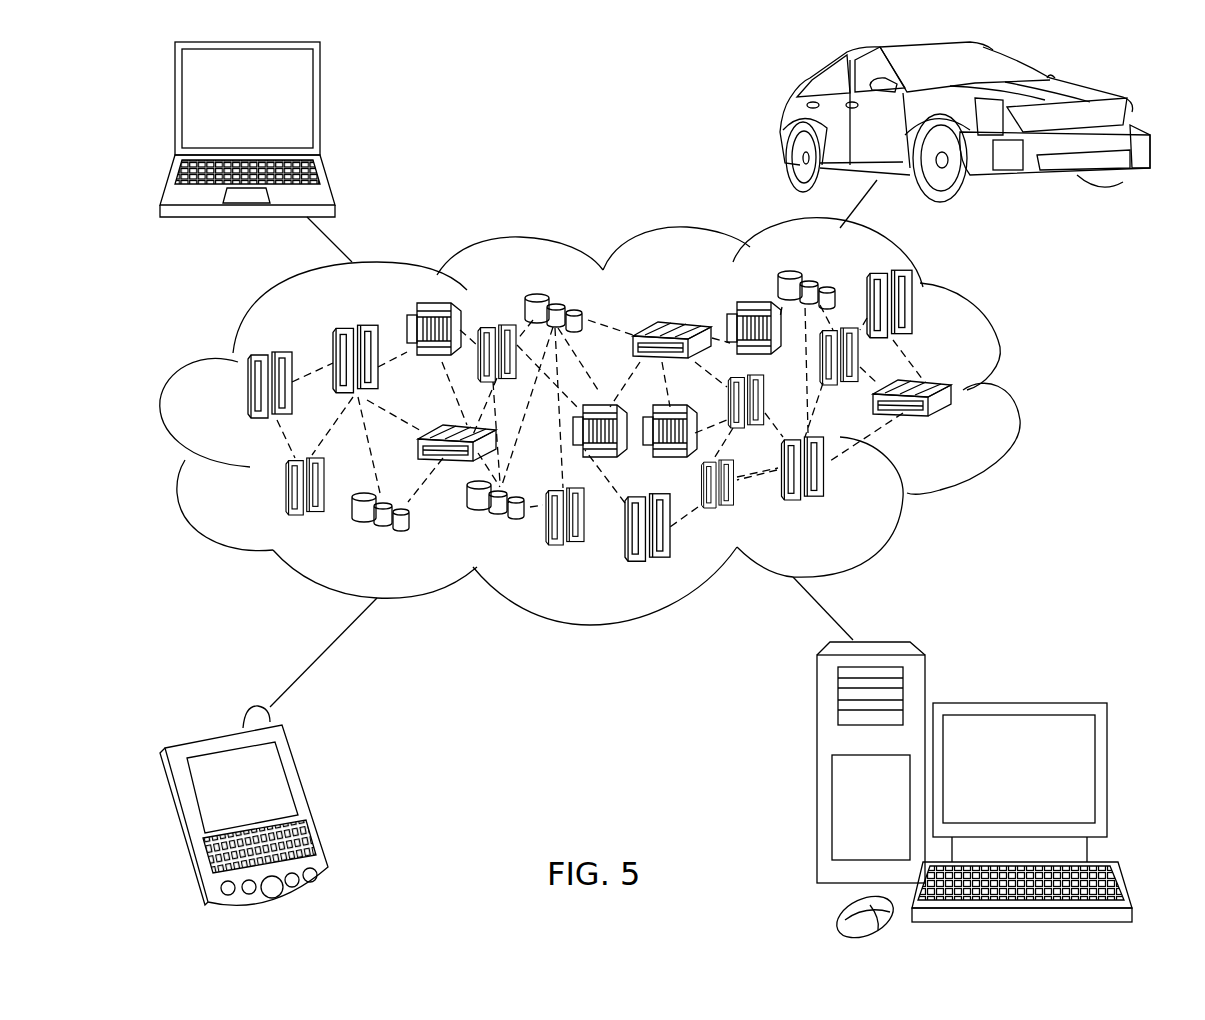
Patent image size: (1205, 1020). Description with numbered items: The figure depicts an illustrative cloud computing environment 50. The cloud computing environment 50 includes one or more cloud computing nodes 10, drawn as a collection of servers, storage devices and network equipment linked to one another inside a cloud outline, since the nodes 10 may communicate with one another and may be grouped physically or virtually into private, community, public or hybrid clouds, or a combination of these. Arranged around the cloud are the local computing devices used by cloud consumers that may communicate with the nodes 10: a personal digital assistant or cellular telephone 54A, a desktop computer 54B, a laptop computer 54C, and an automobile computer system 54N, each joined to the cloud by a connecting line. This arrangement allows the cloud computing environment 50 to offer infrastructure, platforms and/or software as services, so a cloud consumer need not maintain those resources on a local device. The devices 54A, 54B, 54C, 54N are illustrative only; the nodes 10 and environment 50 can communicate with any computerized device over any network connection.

The cloud computing node 10 is at (966, 432).
The cloud computing environment 50 is at (1020, 395).
The personal digital assistant or cellular telephone 54A is at (310, 800).
The desktop computer 54B is at (1017, 703).
The laptop computer 54C is at (322, 103).
The automobile computer system 54N is at (790, 122).